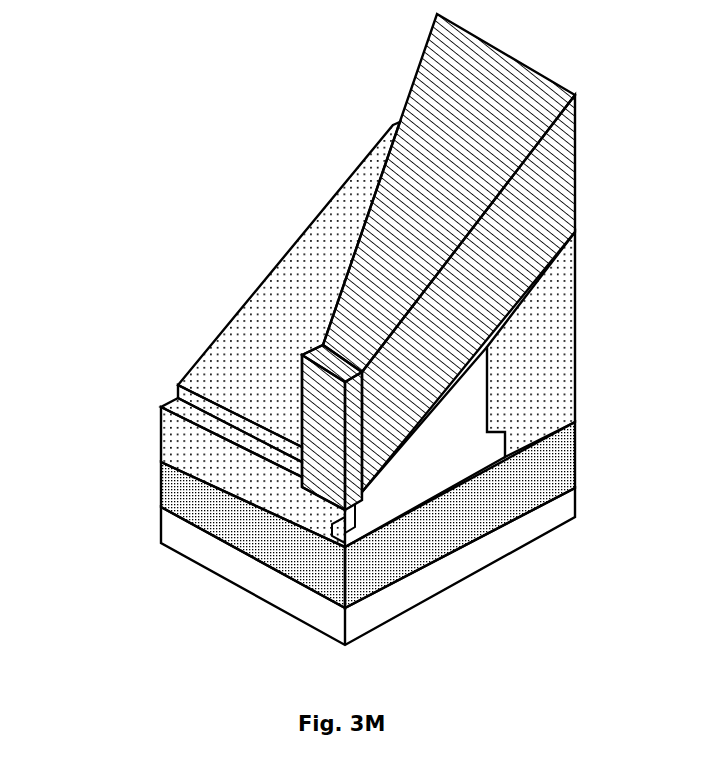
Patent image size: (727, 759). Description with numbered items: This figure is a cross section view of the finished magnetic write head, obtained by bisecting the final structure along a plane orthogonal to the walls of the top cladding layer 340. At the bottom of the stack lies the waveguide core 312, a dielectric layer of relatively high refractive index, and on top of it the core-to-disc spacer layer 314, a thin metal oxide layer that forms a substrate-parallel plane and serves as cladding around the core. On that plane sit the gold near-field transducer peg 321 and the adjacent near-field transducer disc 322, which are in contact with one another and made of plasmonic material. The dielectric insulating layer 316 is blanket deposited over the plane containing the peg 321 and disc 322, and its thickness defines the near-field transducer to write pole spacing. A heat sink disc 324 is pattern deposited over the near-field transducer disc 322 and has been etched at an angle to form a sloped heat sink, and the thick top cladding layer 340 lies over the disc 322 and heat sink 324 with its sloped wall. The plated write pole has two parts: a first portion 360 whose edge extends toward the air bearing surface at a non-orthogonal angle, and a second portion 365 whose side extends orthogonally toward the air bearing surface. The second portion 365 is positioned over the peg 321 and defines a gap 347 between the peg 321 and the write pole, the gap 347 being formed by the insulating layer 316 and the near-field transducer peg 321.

The waveguide core layer 312 is at (180, 537).
The core-to-disc spacer layer 314 is at (180, 489).
The dielectric insulating layer 316 is at (182, 438).
The near-field transducer peg 321 is at (346, 545).
The near-field transducer disc 322 is at (435, 482).
The heat sink disc 324 is at (458, 407).
The top cladding layer 340 is at (350, 203).
The gap 347 is at (352, 518).
The first portion of write pole 360 is at (448, 153).
The second portion of write pole 365 is at (320, 410).